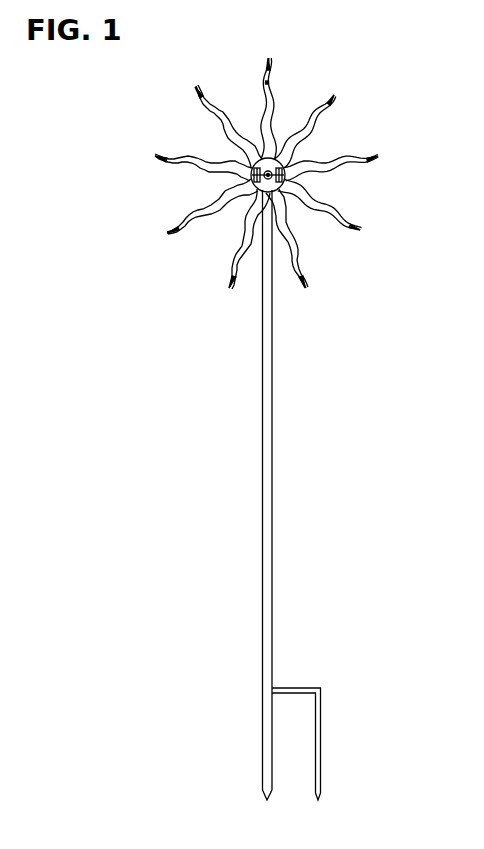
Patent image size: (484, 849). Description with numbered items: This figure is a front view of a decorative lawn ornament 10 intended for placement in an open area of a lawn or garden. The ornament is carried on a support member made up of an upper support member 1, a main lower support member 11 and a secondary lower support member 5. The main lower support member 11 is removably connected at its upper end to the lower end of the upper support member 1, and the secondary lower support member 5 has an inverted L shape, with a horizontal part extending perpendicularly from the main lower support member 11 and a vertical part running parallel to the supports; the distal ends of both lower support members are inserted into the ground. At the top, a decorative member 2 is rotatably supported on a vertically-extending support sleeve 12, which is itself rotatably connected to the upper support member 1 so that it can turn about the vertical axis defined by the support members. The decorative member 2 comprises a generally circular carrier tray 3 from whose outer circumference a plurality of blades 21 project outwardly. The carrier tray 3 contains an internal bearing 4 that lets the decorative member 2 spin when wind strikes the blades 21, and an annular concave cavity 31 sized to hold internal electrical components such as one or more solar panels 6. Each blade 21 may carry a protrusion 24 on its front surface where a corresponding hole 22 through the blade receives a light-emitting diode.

The upper support member 1 is at (338, 450).
The decorative member 2 is at (340, 129).
The carrier tray 3 is at (342, 219).
The internal bearing 4 is at (329, 175).
The secondary lower support member 5 is at (337, 698).
The solar panel 6 is at (368, 154).
The decorative lawn ornament 10 is at (265, 495).
The main lower support member 11 is at (331, 636).
The support sleeve 12 is at (336, 245).
The blade 21 is at (334, 108).
The hole 22 is at (374, 210).
The protrusion 24 is at (334, 95).
The annular concave cavity 31 is at (346, 149).